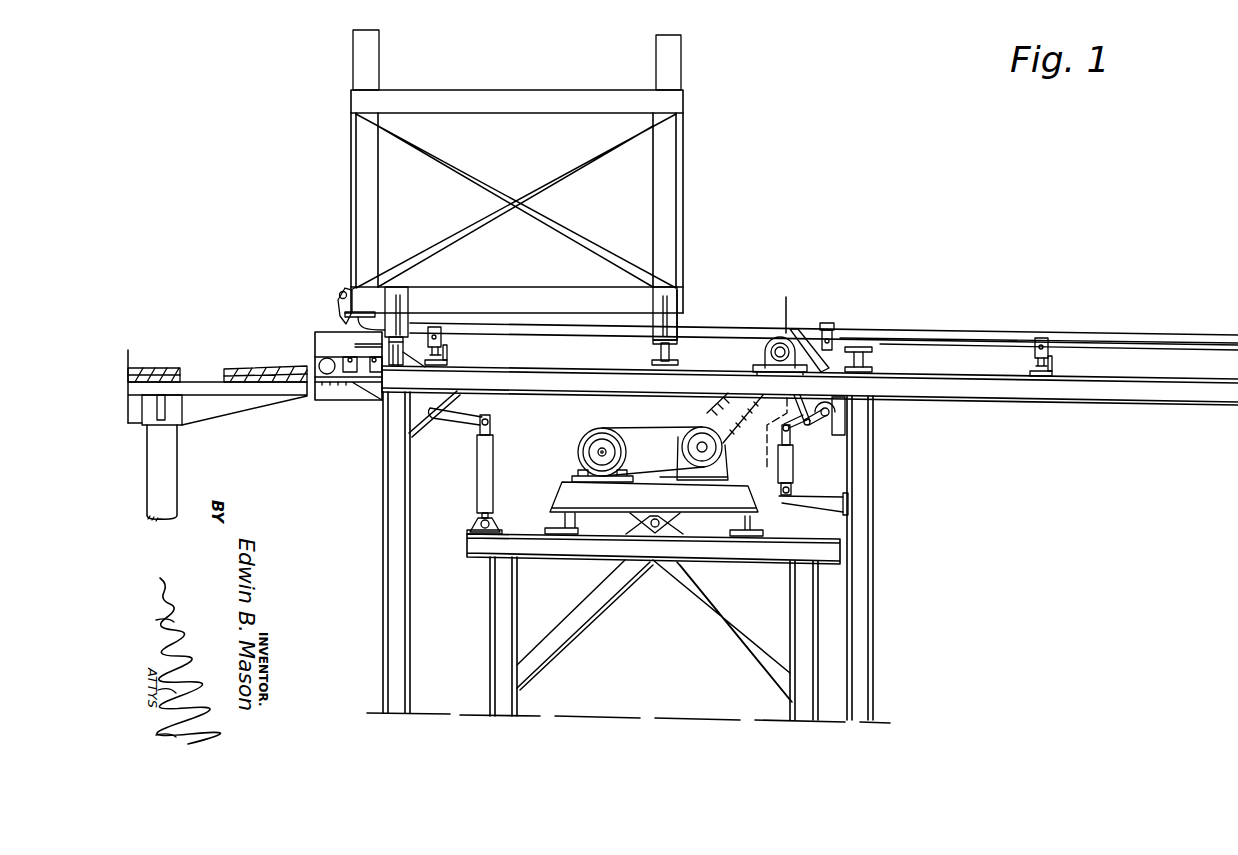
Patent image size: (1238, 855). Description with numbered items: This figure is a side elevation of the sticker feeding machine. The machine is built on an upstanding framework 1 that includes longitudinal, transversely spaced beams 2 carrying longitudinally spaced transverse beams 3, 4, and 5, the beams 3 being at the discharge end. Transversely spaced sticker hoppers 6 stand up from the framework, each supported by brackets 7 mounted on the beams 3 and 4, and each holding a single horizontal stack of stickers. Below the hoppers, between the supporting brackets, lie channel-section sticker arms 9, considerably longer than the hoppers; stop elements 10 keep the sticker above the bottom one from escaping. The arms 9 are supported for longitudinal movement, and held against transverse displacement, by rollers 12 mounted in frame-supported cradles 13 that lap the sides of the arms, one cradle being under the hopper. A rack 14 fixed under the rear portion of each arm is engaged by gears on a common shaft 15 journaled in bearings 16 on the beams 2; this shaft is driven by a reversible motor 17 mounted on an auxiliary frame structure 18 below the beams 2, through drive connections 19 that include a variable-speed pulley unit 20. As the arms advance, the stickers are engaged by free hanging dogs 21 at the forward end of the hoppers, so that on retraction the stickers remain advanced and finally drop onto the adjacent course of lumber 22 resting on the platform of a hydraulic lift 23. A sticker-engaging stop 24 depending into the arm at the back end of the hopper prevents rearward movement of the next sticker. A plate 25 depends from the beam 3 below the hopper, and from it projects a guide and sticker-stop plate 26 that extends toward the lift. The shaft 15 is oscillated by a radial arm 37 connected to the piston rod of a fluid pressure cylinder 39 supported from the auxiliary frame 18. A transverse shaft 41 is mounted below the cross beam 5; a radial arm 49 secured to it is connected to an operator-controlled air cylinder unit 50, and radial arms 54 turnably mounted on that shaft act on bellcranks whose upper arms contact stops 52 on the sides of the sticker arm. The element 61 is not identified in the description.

The upstanding framework 1 is at (887, 445).
The longitudinal beams 2 is at (566, 376).
The transverse beam 3 is at (408, 358).
The transverse beam 4 is at (670, 353).
The cross beam 5 is at (874, 358).
The sticker hopper 6 is at (356, 188).
The brackets 7 is at (406, 298).
The sticker arm 9 is at (540, 327).
The stop elements 10 is at (364, 285).
The rollers 12 is at (778, 309).
The cradles 13 is at (440, 326).
The rack 14 is at (842, 338).
The shaft 15 is at (764, 356).
The bearings 16 is at (781, 362).
The reversible motor 17 is at (600, 431).
The auxiliary frame structure 18 is at (567, 551).
The drive connections 19 is at (683, 407).
The variable-speed pulley unit 20 is at (590, 451).
The free hanging dogs 21 is at (336, 306).
The course of lumber 22 is at (232, 366).
The lift 23 is at (243, 420).
The sticker-engaging stop 24 is at (684, 301).
The plate 25 is at (372, 404).
The guide and sticker-stop plate 26 is at (343, 392).
The radial arm 37 is at (456, 421).
The fluid pressure cylinder 39 is at (483, 480).
The transverse shaft 41 is at (830, 412).
The radial arm 49 is at (796, 428).
The air cylinder unit 50 is at (801, 478).
The stops 52 is at (829, 328).
The radial arms 54 is at (816, 428).
The spring arm 61 is at (798, 328).